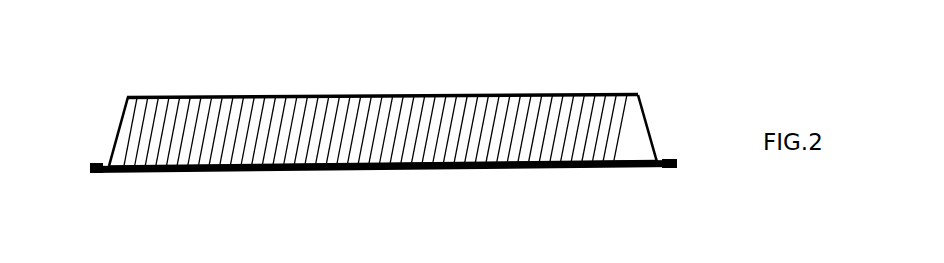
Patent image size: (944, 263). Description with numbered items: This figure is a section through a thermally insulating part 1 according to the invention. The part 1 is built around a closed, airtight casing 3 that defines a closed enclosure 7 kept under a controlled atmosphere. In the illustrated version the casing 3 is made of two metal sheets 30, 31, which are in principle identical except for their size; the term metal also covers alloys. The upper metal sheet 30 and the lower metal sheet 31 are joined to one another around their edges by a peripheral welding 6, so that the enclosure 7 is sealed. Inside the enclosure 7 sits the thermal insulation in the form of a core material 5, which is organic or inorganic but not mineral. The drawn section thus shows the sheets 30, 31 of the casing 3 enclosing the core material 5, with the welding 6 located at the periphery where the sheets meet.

The thermally insulating part 1 is at (645, 56).
The casing 3 is at (390, 84).
The core material 5 is at (617, 143).
The metal sheet 30 is at (175, 95).
The metal sheet 31 is at (250, 172).
The closed enclosure 7 is at (452, 168).
The peripheral welding 6 is at (90, 163).